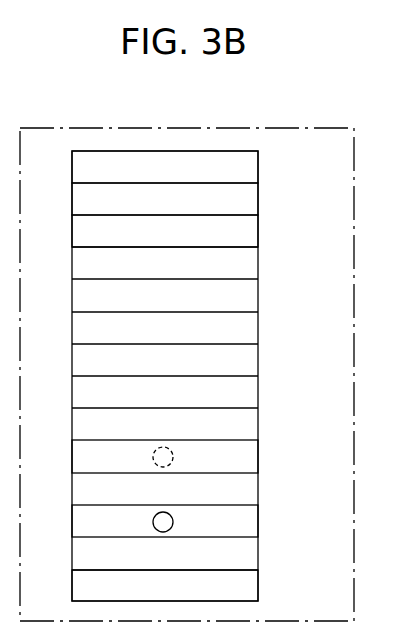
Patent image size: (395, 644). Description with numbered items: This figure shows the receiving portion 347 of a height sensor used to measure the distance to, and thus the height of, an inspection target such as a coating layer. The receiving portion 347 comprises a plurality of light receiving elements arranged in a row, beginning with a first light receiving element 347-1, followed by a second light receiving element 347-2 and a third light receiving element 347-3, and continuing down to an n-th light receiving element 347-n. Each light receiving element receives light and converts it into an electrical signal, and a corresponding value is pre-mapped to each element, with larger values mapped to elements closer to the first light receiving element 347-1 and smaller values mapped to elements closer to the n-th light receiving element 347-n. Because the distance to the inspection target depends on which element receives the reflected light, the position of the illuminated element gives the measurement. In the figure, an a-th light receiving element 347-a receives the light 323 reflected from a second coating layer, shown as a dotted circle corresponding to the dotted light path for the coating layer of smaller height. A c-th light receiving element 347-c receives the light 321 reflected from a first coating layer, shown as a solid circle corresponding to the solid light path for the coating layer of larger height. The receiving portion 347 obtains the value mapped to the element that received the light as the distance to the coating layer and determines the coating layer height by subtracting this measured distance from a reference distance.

The receiving portion 347 is at (186, 344).
The first light receiving element 347-1 is at (258, 168).
The second light receiving element 347-2 is at (258, 200).
The third light receiving element 347-3 is at (258, 228).
The a-th light receiving element 347-a is at (258, 453).
The c-th light receiving element 347-c is at (258, 518).
The n-th light receiving element 347-n is at (258, 580).
The light reflected from second coating layer 323 is at (153, 457).
The light reflected from first coating layer 321 is at (153, 522).